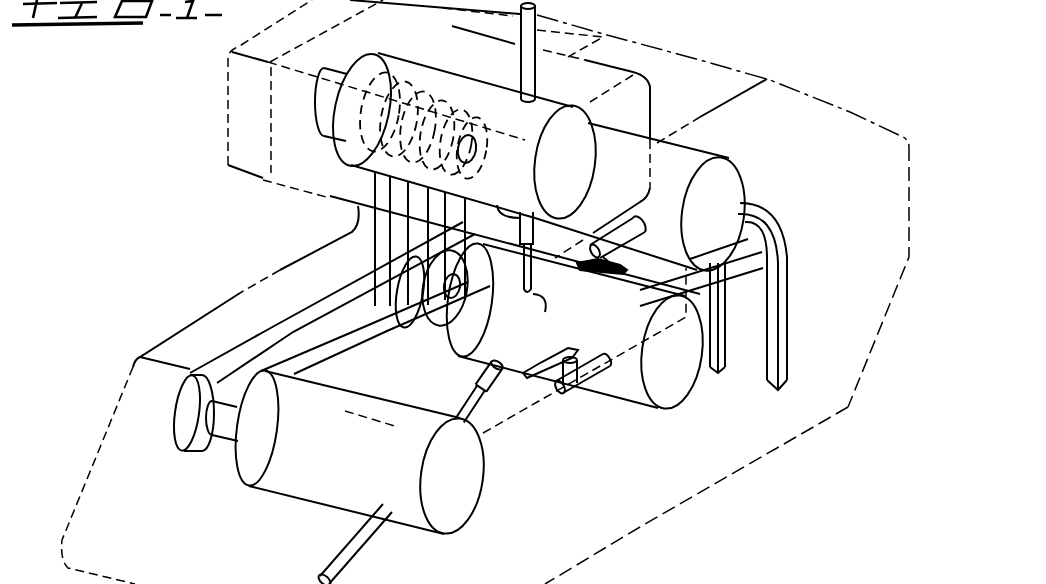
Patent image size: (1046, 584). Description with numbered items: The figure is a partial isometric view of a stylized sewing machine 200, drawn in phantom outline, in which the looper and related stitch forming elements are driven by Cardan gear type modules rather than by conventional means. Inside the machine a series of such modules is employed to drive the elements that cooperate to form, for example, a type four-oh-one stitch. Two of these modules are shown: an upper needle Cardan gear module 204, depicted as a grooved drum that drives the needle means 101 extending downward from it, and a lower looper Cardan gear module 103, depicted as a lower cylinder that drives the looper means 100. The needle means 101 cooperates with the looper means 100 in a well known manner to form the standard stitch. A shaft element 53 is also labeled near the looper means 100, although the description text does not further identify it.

The sewing machine 200 is at (757, 67).
The needle Cardan gear module 204 is at (450, 82).
The needle means 101 is at (525, 270).
The looper means 100 is at (571, 353).
The drive shaft 53 is at (581, 390).
The lower looper Cardan gear module 103 is at (695, 392).